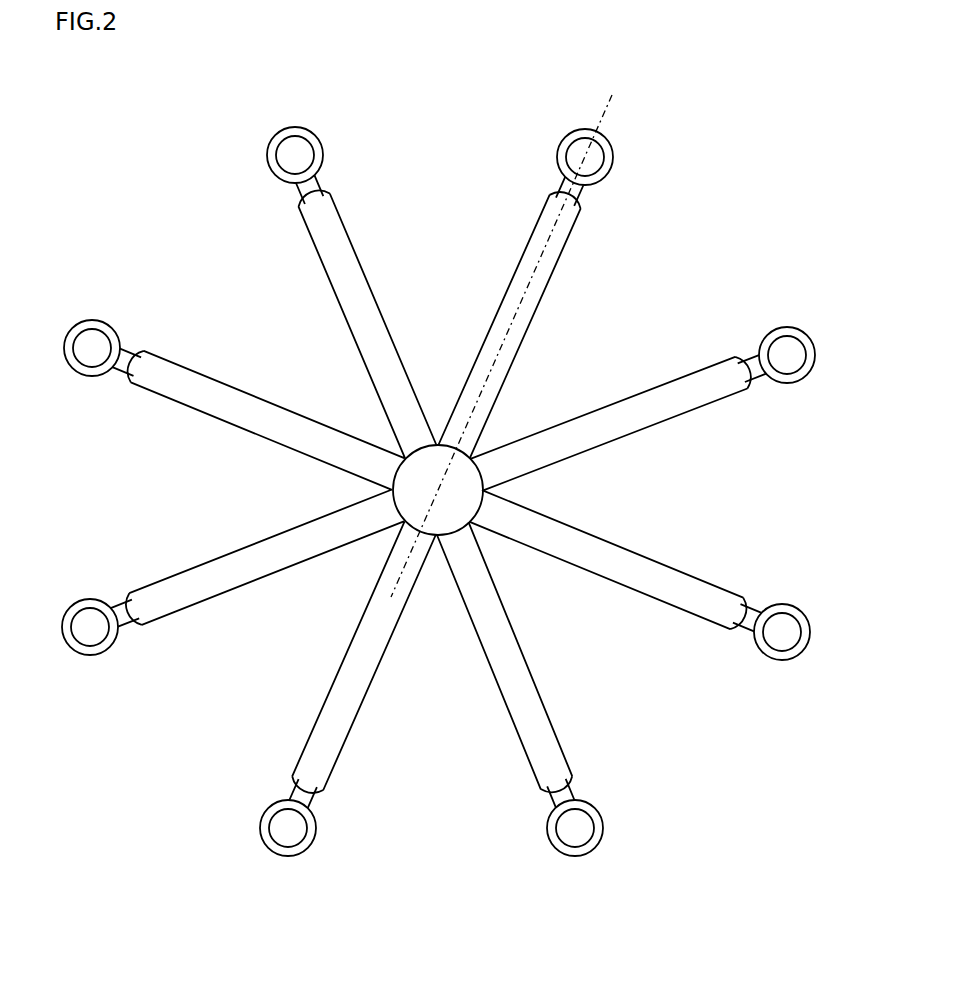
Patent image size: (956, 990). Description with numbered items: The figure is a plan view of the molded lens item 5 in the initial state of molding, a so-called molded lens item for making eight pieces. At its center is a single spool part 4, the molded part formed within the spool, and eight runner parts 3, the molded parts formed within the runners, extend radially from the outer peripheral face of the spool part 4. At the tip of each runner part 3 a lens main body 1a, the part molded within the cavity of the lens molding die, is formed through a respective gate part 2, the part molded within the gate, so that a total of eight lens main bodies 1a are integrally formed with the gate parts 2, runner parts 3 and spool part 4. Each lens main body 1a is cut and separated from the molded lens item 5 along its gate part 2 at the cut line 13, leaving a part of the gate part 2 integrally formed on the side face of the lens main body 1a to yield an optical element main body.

The molded lens item 5 is at (142, 152).
The spool part 4 is at (412, 470).
The runner part 3 is at (323, 265).
The gate part 2 is at (293, 187).
The lens main body 1a is at (278, 128).
The cut line 13 is at (305, 174).